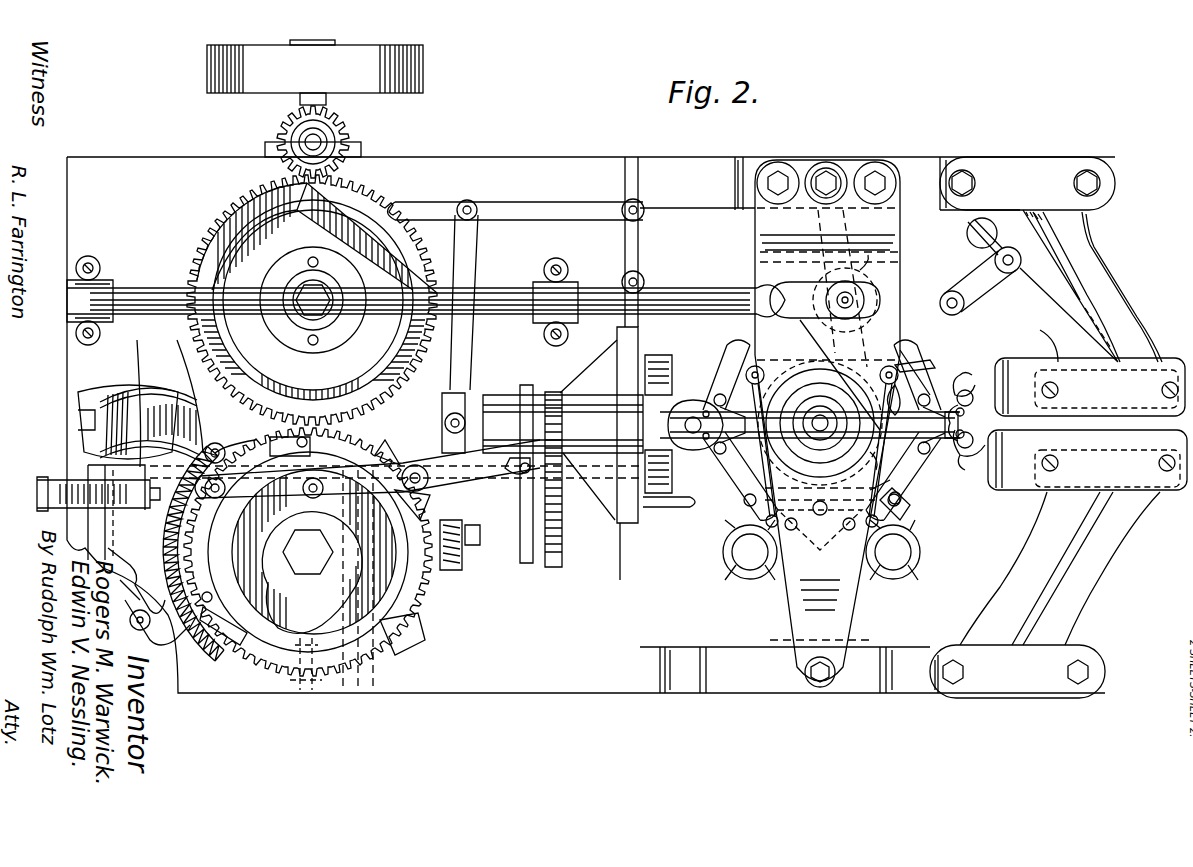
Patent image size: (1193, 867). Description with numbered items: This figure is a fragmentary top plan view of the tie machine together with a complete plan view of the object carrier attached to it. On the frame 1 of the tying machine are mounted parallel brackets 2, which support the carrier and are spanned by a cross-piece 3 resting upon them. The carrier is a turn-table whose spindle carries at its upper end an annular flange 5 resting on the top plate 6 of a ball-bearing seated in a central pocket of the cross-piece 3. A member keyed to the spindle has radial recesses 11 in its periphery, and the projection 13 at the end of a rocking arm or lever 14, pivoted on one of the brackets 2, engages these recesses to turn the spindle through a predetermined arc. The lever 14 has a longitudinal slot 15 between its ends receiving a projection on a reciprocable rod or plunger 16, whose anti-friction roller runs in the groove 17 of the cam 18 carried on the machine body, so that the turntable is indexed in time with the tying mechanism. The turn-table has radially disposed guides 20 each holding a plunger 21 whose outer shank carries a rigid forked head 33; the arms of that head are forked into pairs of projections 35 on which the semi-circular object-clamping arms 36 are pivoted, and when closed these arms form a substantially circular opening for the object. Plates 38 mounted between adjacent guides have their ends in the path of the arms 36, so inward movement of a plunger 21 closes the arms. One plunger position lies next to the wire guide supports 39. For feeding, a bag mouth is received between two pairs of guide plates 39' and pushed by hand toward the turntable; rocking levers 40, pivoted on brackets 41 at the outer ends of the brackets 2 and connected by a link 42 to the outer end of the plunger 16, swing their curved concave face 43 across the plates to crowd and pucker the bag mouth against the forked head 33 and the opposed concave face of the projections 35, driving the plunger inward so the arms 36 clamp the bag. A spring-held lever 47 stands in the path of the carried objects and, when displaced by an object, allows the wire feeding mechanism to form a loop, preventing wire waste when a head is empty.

The frame 1 is at (594, 165).
The brackets 2 is at (925, 164).
The cross-piece 3 is at (795, 566).
The annular flange 5 is at (660, 415).
The top plate 6 is at (905, 490).
The radial recesses 11 is at (722, 497).
The projection 13 is at (903, 363).
The rocking arm or lever 14 is at (880, 250).
The longitudinal slot 15 is at (855, 305).
The reciprocable rod or plunger 16 is at (688, 297).
The groove 17 is at (237, 212).
The cam 18 is at (272, 262).
The radially disposed guides 20 is at (900, 505).
The plunger 21 is at (740, 455).
The forked head 33 is at (905, 460).
The projections 35 is at (1005, 425).
The object-clamping arms 36 is at (965, 392).
The plates 38 is at (905, 373).
The wire guide supports 39 is at (678, 424).
The guide plates 39' is at (1087, 482).
The rocking levers 40 is at (1047, 300).
The brackets 41 is at (1098, 278).
The link 42 is at (975, 290).
The concave face 43 is at (1140, 390).
The spring-held lever 47 is at (685, 505).